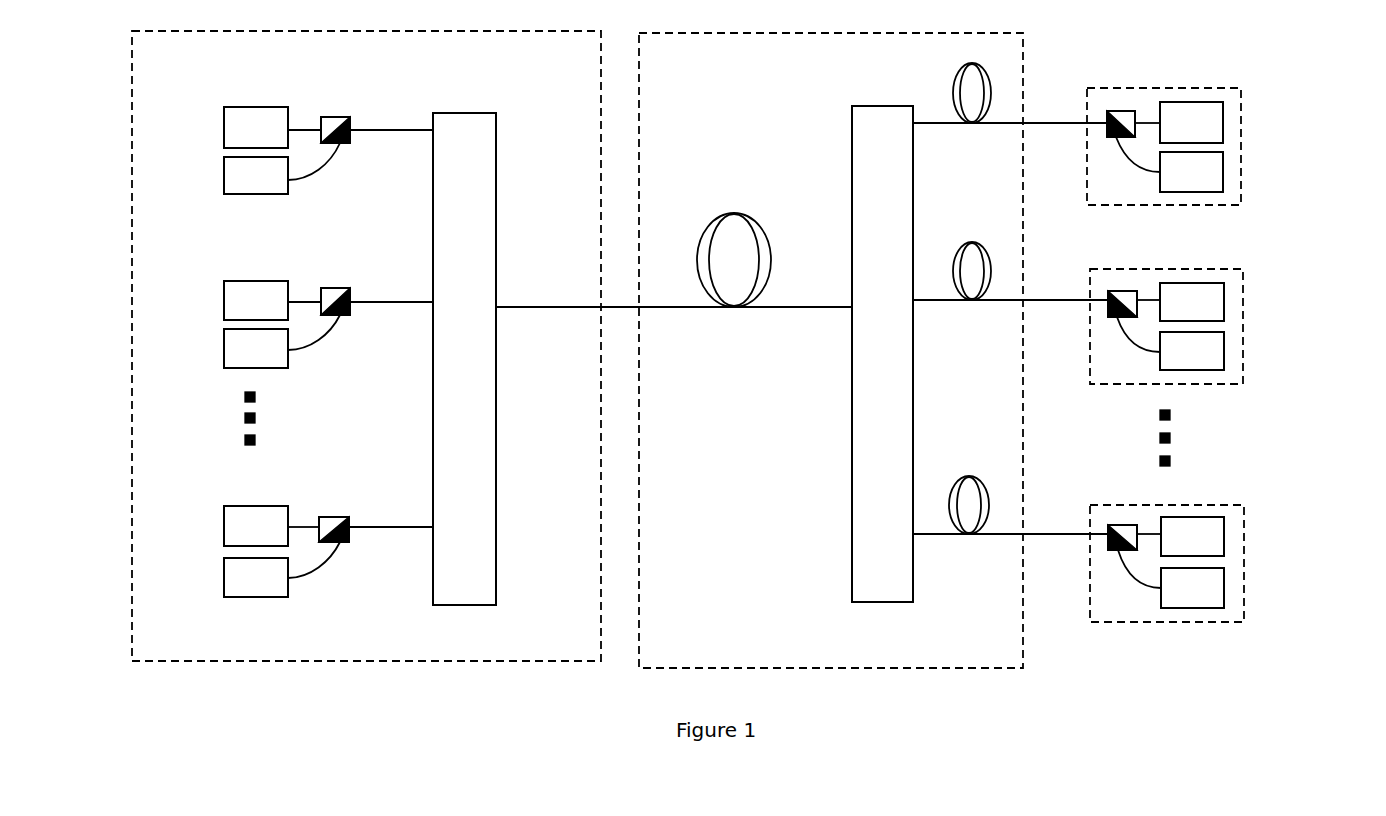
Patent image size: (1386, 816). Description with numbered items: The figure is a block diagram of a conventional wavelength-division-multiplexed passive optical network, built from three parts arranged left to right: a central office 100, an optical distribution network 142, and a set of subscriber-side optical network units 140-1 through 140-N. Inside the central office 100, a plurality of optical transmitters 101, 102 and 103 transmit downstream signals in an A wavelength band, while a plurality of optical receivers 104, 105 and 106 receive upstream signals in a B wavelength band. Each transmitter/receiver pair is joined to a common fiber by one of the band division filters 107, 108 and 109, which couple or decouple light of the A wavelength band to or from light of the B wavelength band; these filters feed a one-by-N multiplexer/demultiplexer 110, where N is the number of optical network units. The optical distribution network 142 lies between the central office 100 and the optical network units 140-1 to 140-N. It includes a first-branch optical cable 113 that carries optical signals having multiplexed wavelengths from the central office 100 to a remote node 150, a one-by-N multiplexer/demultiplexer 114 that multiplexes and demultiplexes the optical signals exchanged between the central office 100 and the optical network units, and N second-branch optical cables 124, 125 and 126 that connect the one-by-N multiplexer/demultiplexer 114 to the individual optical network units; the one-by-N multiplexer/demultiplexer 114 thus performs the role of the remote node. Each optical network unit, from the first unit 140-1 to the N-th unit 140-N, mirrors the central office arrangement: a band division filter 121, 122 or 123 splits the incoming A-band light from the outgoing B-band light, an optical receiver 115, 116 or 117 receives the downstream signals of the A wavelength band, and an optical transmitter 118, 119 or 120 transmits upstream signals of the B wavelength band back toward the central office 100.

The central office 100 is at (366, 369).
The optical transmitter 101 is at (256, 107).
The optical transmitter 102 is at (224, 300).
The optical transmitter 103 is at (255, 506).
The optical receiver 104 is at (224, 175).
The optical receiver 105 is at (224, 353).
The optical receiver 106 is at (224, 580).
The band division filter 107 is at (327, 117).
The band division filter 108 is at (327, 288).
The band division filter 109 is at (328, 517).
The 1×N multiplexer/demultiplexer 110 is at (470, 113).
The first-branch optical cable 113 is at (732, 212).
The 1×N multiplexer/demultiplexer 114 is at (880, 106).
The optical receiver 115 is at (1210, 102).
The optical receiver 116 is at (1226, 290).
The optical receiver 117 is at (1212, 513).
The optical transmitter 118 is at (1177, 196).
The optical transmitter 119 is at (1208, 372).
The optical transmitter 120 is at (1190, 610).
The band division filter 121 is at (1112, 111).
The band division filter 122 is at (1105, 313).
The band division filter 123 is at (1110, 525).
The second-branch optical cable 124 is at (986, 63).
The second-branch optical cable 125 is at (975, 240).
The second-branch optical cable 126 is at (965, 477).
The optical network unit 140-1 is at (1258, 102).
The optical network unit 140-N is at (1246, 530).
The optical distribution network 142 is at (770, 88).
The remote node 150 is at (802, 367).